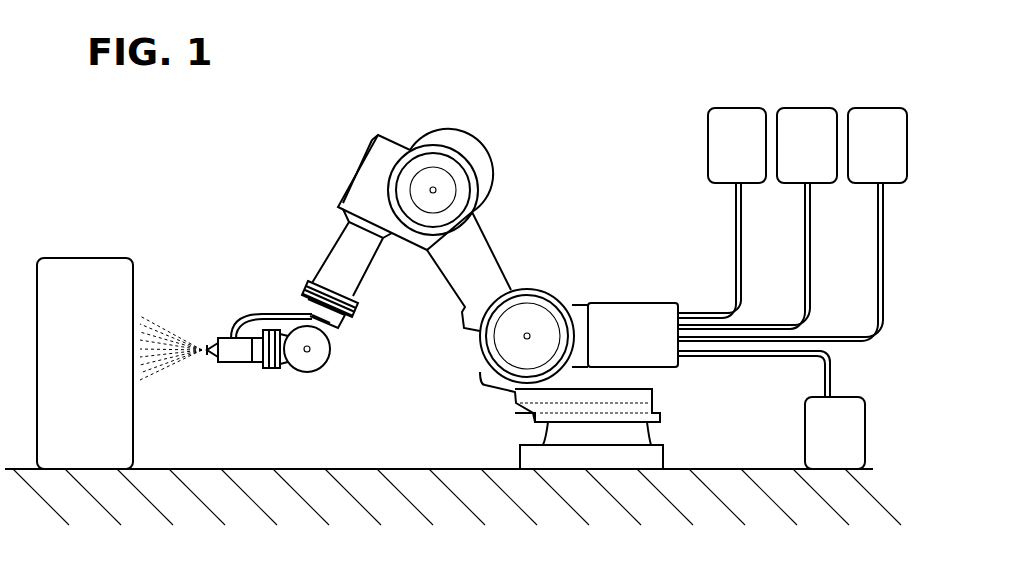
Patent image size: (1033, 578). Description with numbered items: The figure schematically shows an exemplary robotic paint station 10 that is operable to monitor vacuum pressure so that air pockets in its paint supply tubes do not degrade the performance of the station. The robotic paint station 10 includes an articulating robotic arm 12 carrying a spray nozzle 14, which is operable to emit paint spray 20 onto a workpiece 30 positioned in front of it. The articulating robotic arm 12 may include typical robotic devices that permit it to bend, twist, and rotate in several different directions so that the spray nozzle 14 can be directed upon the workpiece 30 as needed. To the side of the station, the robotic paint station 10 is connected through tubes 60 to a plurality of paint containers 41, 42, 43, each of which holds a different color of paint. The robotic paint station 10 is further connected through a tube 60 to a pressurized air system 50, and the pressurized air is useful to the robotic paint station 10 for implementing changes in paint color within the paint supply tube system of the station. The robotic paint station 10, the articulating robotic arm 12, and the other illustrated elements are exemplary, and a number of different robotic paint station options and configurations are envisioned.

The robotic paint station 10 is at (573, 309).
The articulating robotic arm 12 is at (347, 253).
The spray nozzle 14 is at (222, 346).
The paint spray 20 is at (168, 332).
The workpiece 30 is at (85, 363).
The paint container 41 is at (737, 145).
The paint container 42 is at (807, 145).
The paint container 43 is at (877, 145).
The pressurized air system 50 is at (835, 433).
The tubes 60 is at (804, 287).